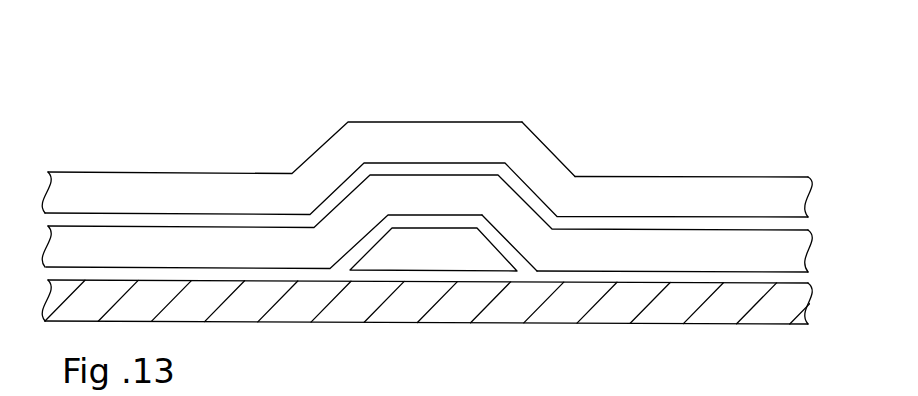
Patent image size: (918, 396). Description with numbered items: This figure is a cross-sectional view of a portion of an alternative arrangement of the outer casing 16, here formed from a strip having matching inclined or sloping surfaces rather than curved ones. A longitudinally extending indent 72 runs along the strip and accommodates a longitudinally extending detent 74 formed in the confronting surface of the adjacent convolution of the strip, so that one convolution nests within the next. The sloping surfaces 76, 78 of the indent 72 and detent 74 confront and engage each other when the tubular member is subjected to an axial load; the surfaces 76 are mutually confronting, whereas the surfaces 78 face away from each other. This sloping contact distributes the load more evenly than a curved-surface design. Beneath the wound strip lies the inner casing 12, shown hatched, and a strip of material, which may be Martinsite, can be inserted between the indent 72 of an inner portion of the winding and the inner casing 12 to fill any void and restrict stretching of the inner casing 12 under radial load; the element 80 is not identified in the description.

The inner casing 12 is at (242, 302).
The outer casing 16 is at (158, 197).
The indent 72 is at (393, 172).
The detent 74 is at (438, 192).
The sloping surfaces 76 is at (530, 188).
The sloping surfaces 78 is at (530, 210).
The spacer bump 80 is at (432, 243).